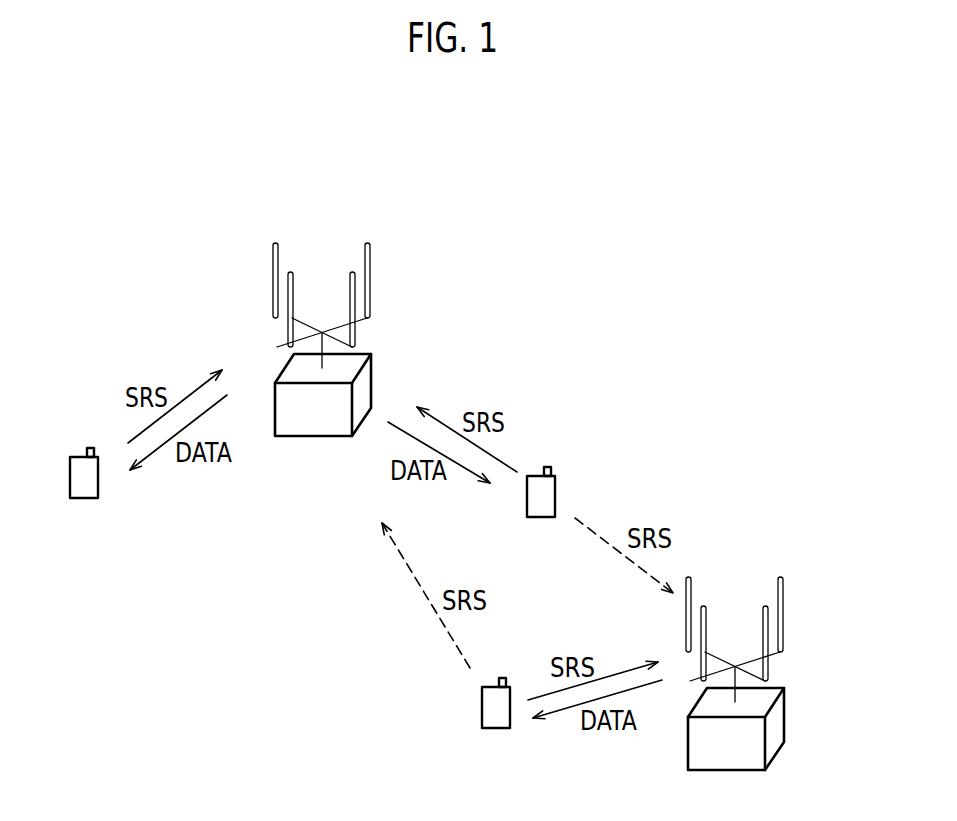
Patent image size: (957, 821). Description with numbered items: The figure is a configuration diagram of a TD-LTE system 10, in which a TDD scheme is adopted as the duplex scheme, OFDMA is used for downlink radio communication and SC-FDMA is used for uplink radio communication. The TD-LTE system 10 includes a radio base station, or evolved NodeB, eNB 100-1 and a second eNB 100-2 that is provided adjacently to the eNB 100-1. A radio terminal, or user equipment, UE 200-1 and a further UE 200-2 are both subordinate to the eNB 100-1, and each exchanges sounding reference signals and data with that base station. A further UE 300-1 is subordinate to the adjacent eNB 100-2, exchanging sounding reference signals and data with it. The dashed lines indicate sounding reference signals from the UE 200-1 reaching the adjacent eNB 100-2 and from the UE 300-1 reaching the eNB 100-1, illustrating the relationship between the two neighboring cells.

The TD-LTE system 10 is at (635, 220).
The radio base station (eNB) 100-1 is at (368, 374).
The eNB 100-2 is at (782, 712).
The radio terminal (UE) 200-1 is at (555, 497).
The UE 200-2 is at (90, 500).
The UE 300-1 is at (503, 730).